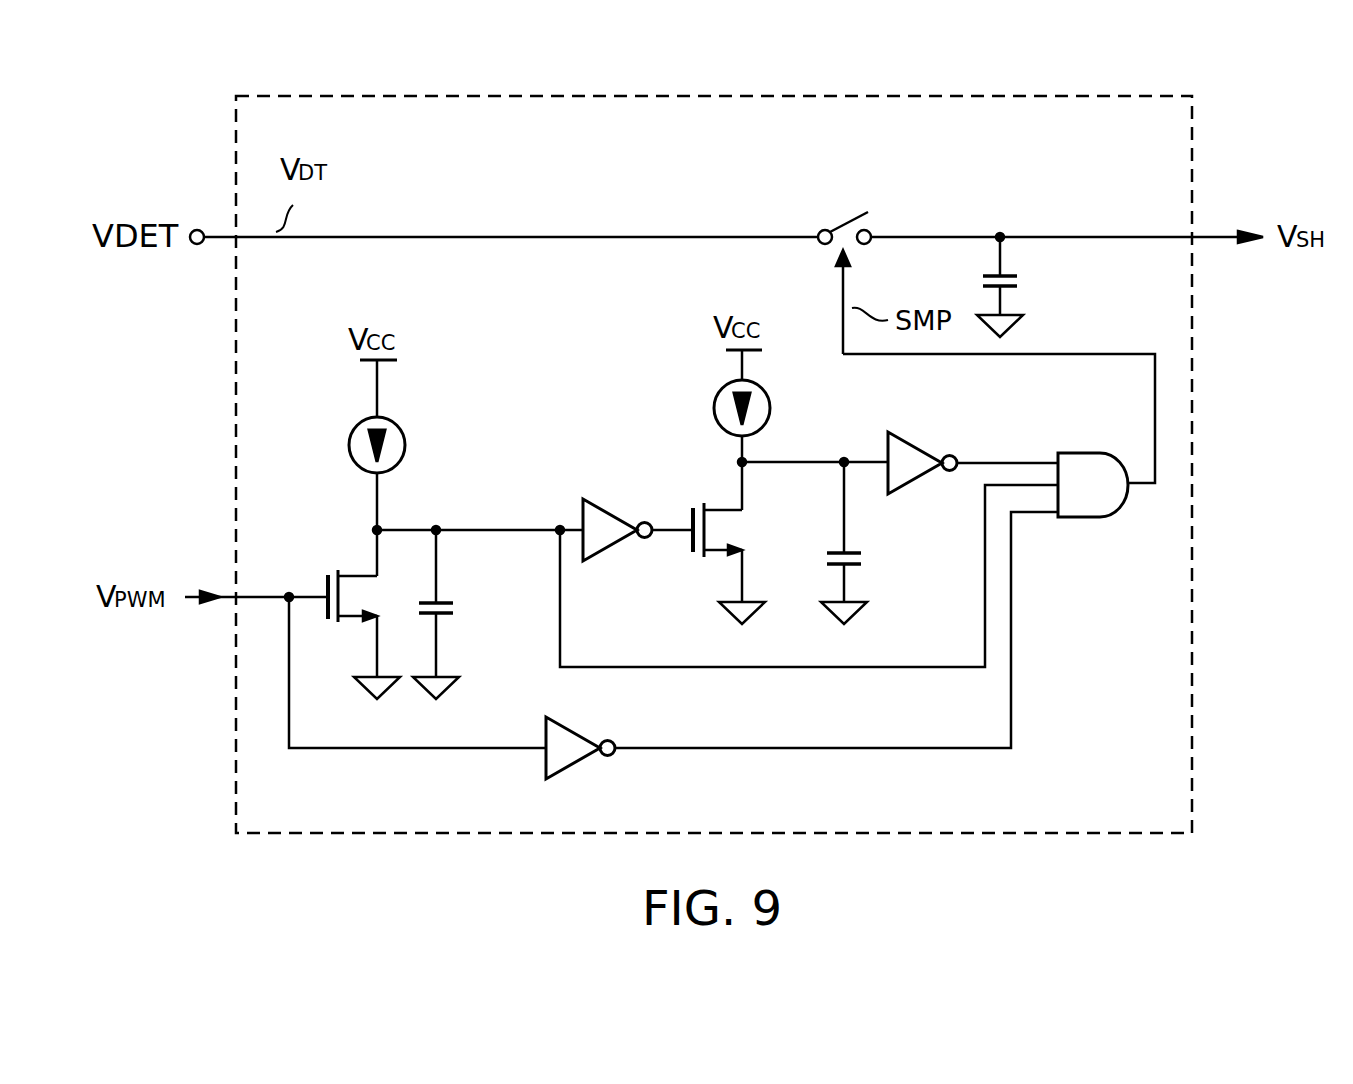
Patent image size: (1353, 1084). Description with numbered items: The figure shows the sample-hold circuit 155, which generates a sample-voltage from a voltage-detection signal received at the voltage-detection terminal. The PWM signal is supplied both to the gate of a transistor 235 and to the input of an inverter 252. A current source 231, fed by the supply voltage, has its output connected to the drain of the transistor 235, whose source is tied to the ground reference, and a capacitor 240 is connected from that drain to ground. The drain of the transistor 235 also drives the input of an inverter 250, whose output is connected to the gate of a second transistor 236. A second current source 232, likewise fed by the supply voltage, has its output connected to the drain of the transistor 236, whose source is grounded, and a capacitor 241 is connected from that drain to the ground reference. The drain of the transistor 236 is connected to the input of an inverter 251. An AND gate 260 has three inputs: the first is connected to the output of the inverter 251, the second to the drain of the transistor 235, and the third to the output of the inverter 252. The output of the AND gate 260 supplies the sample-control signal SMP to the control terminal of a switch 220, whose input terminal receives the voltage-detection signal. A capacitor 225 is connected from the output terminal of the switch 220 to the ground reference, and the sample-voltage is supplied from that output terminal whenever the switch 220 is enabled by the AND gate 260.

The sample-hold circuit 155 is at (1192, 162).
The switch 220 is at (838, 212).
The capacitor 225 is at (1020, 279).
The current source 231 is at (410, 447).
The current source 232 is at (771, 405).
The transistor 235 is at (322, 565).
The transistor 236 is at (735, 532).
The capacitor 240 is at (457, 610).
The capacitor 241 is at (868, 558).
The inverter 250 is at (607, 503).
The inverter 251 is at (918, 440).
The inverter 252 is at (535, 767).
The AND gate 260 is at (1088, 522).